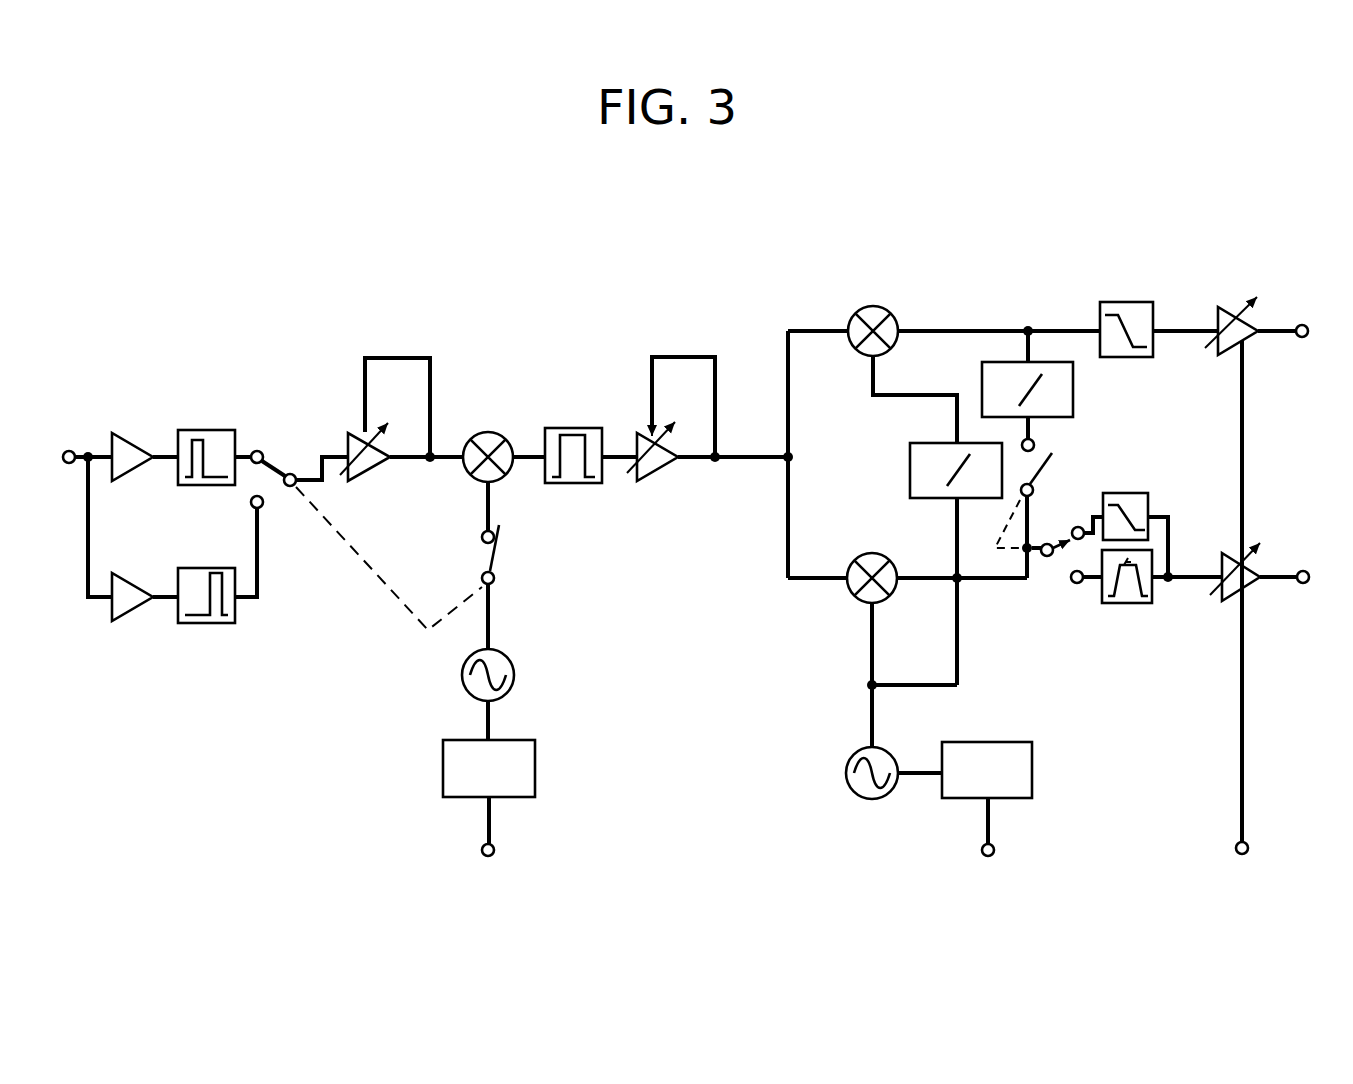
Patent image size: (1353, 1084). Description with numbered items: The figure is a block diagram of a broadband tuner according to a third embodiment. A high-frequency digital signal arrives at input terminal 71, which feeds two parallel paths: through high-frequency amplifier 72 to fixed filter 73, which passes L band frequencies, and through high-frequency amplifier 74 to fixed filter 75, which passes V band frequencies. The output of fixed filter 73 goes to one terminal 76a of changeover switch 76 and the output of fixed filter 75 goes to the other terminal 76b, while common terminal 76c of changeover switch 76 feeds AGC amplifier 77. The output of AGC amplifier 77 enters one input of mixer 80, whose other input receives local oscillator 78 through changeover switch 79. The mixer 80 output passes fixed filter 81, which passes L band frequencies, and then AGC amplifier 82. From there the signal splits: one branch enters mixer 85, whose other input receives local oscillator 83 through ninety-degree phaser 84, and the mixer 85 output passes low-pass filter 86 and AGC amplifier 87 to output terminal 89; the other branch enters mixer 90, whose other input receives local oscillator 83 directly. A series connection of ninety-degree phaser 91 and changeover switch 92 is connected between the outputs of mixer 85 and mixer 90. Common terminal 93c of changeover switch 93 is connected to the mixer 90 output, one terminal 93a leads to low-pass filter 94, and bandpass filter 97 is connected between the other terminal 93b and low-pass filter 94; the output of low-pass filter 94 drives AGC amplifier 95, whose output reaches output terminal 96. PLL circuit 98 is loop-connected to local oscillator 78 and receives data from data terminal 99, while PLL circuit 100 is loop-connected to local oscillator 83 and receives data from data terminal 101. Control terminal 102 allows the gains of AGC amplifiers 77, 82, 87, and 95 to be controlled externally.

The input terminal 71 is at (65, 450).
The high-frequency amplifier 72 is at (132, 615).
The fixed filter 73 is at (213, 625).
The high-frequency amplifier 74 is at (128, 442).
The fixed filter 75 is at (197, 428).
The changeover switch 76 is at (282, 458).
The one terminal of changeover switch 76a is at (263, 512).
The other terminal of changeover switch 76b is at (258, 450).
The common terminal of changeover switch 76c is at (296, 485).
The AGC amplifier 77 is at (368, 436).
The local oscillator 78 is at (515, 662).
The changeover switch 79 is at (503, 557).
The mixer 80 is at (497, 422).
The fixed filter 81 is at (570, 422).
The AGC amplifier 82 is at (652, 477).
The local oscillator 83 is at (848, 753).
The 90-degree phaser 84 is at (910, 457).
The mixer 85 is at (890, 300).
The low-pass filter 86 is at (1127, 298).
The AGC amplifier 87 is at (1233, 300).
The output terminal 89 is at (1305, 318).
The mixer 90 is at (858, 550).
The 90-degree phaser 91 is at (1075, 392).
The changeover switch 92 is at (1053, 462).
The changeover switch 93 is at (1058, 533).
The one terminal of changeover switch 93a is at (1082, 527).
The other terminal of changeover switch 93b is at (1078, 584).
The common terminal of changeover switch 93c is at (1045, 558).
The low-pass filter 94 is at (1152, 500).
The AGC amplifier 95 is at (1262, 556).
The output terminal 96 is at (1298, 593).
The bandpass filter 97 is at (1140, 604).
The PLL circuit 98 is at (540, 758).
The data terminal 99 is at (502, 847).
The PLL circuit 100 is at (1035, 760).
The data terminal 101 is at (998, 848).
The control terminal 102 is at (1250, 843).